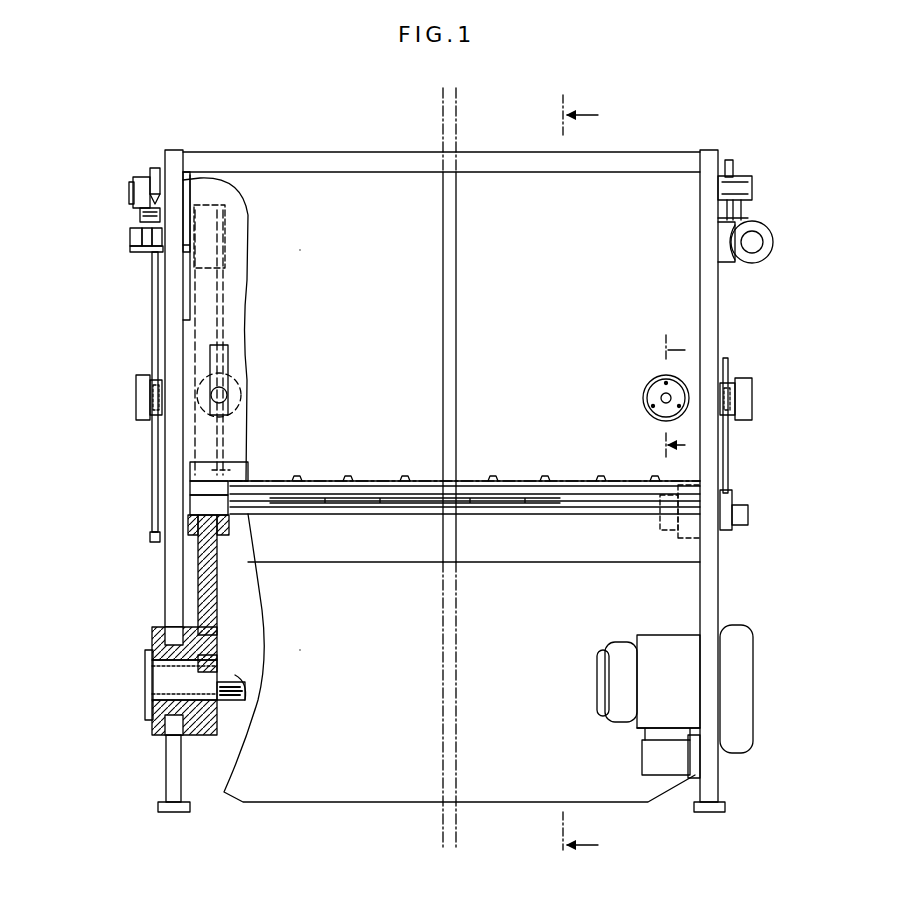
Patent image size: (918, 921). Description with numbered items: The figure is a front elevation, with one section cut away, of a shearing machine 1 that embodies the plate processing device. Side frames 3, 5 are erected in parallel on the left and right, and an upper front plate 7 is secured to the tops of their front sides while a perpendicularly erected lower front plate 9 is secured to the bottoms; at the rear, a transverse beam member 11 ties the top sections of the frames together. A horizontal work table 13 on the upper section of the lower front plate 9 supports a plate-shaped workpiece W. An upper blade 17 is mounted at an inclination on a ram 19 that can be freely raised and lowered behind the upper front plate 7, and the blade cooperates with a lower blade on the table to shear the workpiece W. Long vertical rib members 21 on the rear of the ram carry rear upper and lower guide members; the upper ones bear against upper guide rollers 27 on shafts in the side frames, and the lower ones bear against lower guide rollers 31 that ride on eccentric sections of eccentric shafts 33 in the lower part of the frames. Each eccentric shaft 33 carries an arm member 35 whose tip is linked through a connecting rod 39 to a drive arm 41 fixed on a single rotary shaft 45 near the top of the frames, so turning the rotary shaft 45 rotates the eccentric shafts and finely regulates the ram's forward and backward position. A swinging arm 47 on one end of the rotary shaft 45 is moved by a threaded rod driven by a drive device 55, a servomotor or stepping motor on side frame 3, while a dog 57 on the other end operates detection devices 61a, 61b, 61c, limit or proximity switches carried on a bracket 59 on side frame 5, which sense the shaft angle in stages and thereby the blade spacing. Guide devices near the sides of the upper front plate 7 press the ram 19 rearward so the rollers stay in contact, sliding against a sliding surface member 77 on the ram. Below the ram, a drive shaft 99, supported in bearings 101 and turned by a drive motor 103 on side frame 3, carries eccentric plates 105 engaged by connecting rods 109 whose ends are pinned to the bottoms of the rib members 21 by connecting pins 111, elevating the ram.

The shearing machine 1 is at (673, 124).
The side frame 3 is at (718, 565).
The side frame 5 is at (170, 762).
The upper front plate 7 is at (390, 309).
The lower front plate 9 is at (412, 664).
The beam member 11 is at (460, 162).
The work table 13 is at (410, 558).
The upper blade 17 is at (248, 470).
The ram 19 is at (235, 215).
The rib member 21 is at (222, 305).
The upper guide roller 27 is at (226, 262).
The lower guide roller 31 is at (685, 545).
The eccentric shaft 33 is at (748, 518).
The arm member 35 is at (733, 505).
The connecting rod 39 is at (152, 460).
The drive arm 41 is at (158, 168).
The rotary shaft 45 is at (133, 192).
The swinging arm 47 is at (742, 210).
The drive device 55 is at (772, 242).
The dog 57 is at (152, 178).
The bracket 59 is at (163, 252).
The detection device 61a is at (138, 232).
The detection device 61b is at (150, 240).
The detection device 61c is at (160, 247).
The sliding surface member 77 is at (232, 372).
The drive shaft 99 is at (240, 690).
The bearing 101 is at (218, 722).
The drive motor 103 is at (687, 699).
The eccentric plate 105 is at (218, 637).
The connecting rod 109 is at (218, 570).
The connecting pin 111 is at (228, 515).
The workpiece W is at (462, 480).